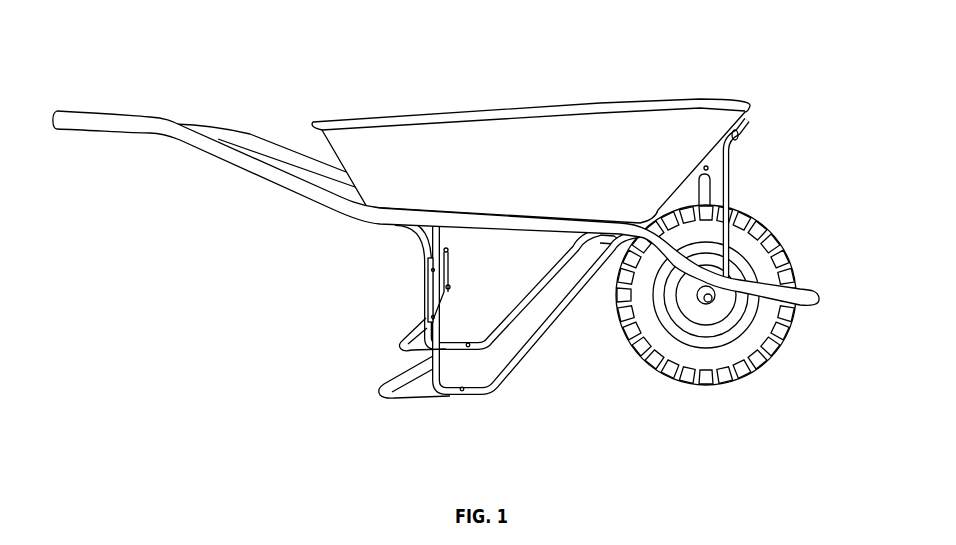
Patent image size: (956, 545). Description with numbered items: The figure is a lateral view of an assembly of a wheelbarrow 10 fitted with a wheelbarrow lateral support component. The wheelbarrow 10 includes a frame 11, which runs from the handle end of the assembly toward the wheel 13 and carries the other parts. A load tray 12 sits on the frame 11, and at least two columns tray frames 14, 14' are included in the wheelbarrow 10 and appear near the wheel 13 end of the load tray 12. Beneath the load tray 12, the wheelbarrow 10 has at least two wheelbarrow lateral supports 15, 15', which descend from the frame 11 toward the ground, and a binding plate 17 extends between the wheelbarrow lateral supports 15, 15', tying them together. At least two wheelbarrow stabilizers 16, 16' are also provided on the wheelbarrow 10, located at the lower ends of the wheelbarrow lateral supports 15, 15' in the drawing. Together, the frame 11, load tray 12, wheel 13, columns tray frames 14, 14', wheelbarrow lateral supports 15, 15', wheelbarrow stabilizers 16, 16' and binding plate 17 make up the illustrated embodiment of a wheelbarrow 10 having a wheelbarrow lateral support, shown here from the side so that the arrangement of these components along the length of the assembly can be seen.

The wheelbarrow 10 is at (239, 66).
The frame 11 is at (822, 296).
The load tray 12 is at (606, 136).
The wheel 13 is at (759, 351).
The columns tray frame 14 is at (774, 197).
The columns tray frame 14' is at (748, 181).
The wheelbarrow lateral support 15 is at (538, 324).
The wheelbarrow lateral support 15' is at (502, 314).
The wheelbarrow stabilizer 16 is at (354, 377).
The wheelbarrow stabilizer 16' is at (372, 330).
The binding plate 17 is at (435, 278).